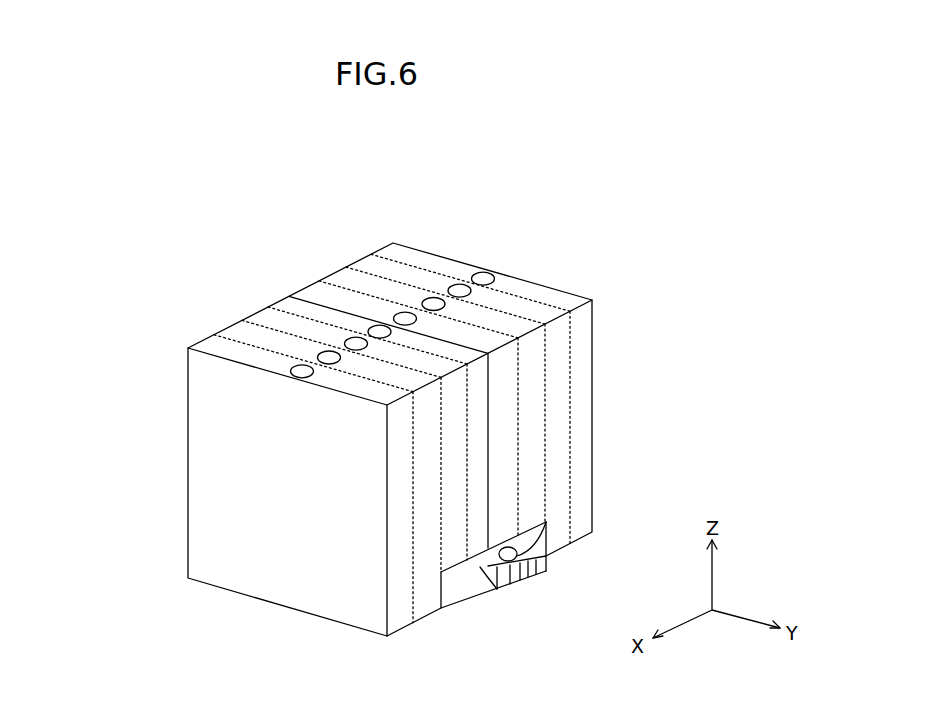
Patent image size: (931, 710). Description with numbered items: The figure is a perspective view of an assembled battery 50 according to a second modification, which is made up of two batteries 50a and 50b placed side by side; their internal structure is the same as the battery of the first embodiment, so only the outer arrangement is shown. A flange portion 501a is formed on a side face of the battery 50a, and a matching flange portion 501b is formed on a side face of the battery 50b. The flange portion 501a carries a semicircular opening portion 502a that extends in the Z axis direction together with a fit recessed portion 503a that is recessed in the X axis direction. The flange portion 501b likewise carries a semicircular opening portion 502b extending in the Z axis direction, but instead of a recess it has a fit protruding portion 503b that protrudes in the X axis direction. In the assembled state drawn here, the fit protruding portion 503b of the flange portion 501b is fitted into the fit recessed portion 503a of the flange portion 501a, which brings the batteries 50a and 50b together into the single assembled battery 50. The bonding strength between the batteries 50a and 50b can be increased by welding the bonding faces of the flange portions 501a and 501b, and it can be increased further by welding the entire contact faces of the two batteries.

The assembled battery 50 is at (558, 268).
The battery 50a is at (233, 312).
The battery 50b is at (348, 257).
The flange portion 501a is at (477, 563).
The flange portion 501b is at (548, 557).
The semicircular opening portion 502a is at (510, 568).
The semicircular opening portion 502b is at (546, 522).
The fit recessed portion 503a is at (497, 567).
The fit protruding portion 503b is at (493, 550).